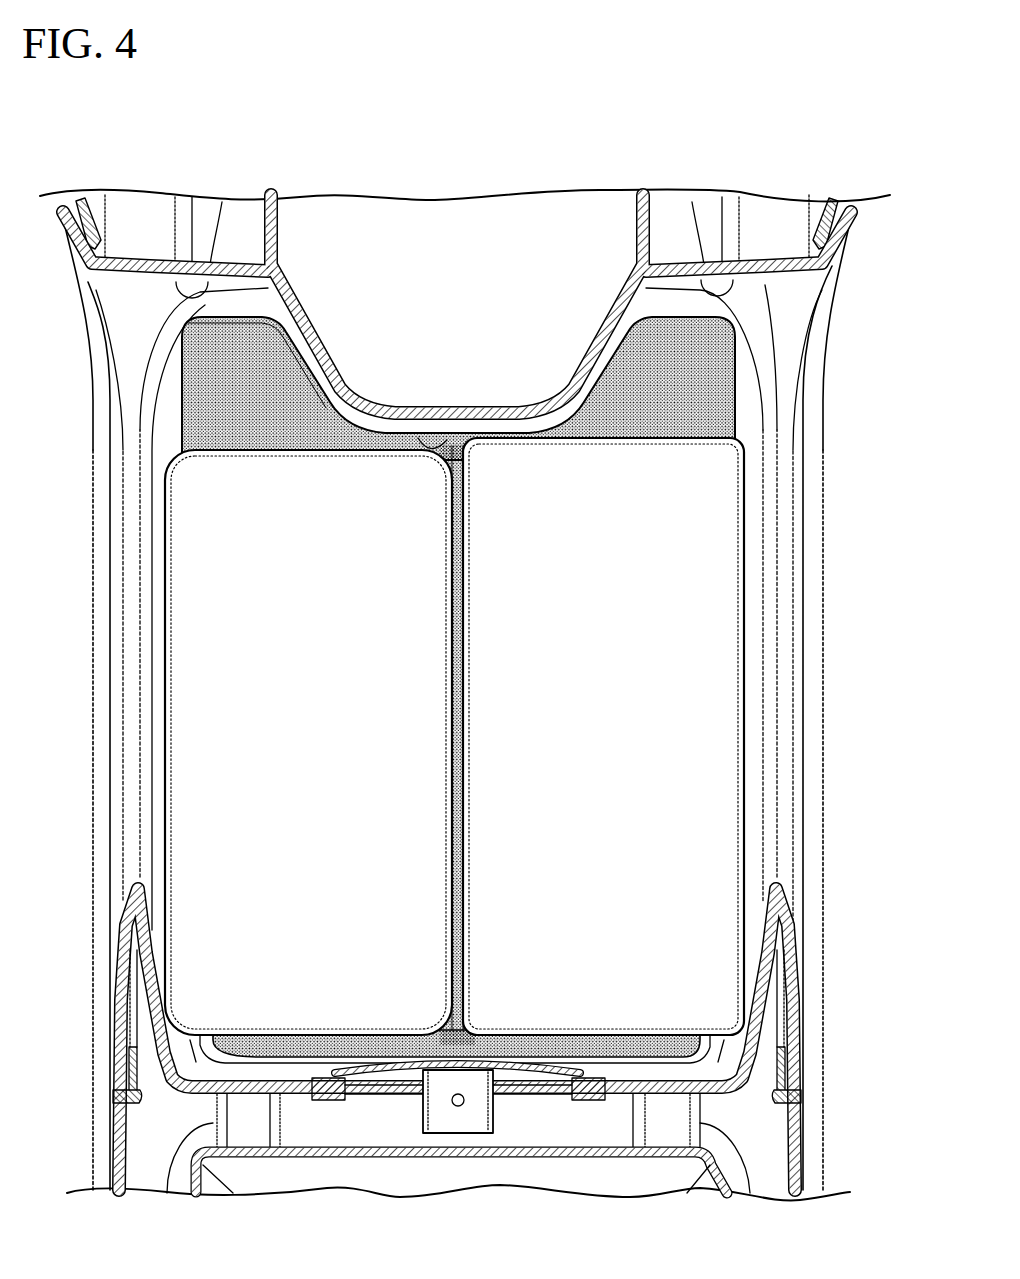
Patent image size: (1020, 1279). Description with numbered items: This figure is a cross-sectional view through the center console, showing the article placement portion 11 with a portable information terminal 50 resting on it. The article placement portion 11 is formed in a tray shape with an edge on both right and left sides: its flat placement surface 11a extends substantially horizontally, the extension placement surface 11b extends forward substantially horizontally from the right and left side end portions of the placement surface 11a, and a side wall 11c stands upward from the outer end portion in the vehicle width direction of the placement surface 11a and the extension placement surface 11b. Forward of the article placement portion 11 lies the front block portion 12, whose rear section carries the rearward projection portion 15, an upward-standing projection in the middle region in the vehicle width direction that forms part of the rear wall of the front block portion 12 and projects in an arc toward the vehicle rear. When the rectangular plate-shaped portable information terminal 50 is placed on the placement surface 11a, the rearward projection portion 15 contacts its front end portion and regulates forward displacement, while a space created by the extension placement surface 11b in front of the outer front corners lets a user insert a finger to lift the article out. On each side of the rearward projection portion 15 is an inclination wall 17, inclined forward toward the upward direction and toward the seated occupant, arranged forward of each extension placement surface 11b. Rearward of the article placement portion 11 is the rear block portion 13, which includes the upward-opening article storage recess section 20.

The article placement portion 11 is at (775, 727).
The placement surface 11a is at (447, 450).
The extension placement surface 11b is at (458, 582).
The side wall 11c is at (147, 637).
The front block portion 12 is at (830, 263).
The rear block portion 13 is at (803, 1017).
The rearward projection portion 15 is at (457, 437).
The inclination wall 17 is at (176, 280).
The article storage recess section 20 is at (813, 1180).
The portable information terminal 50 is at (678, 553).